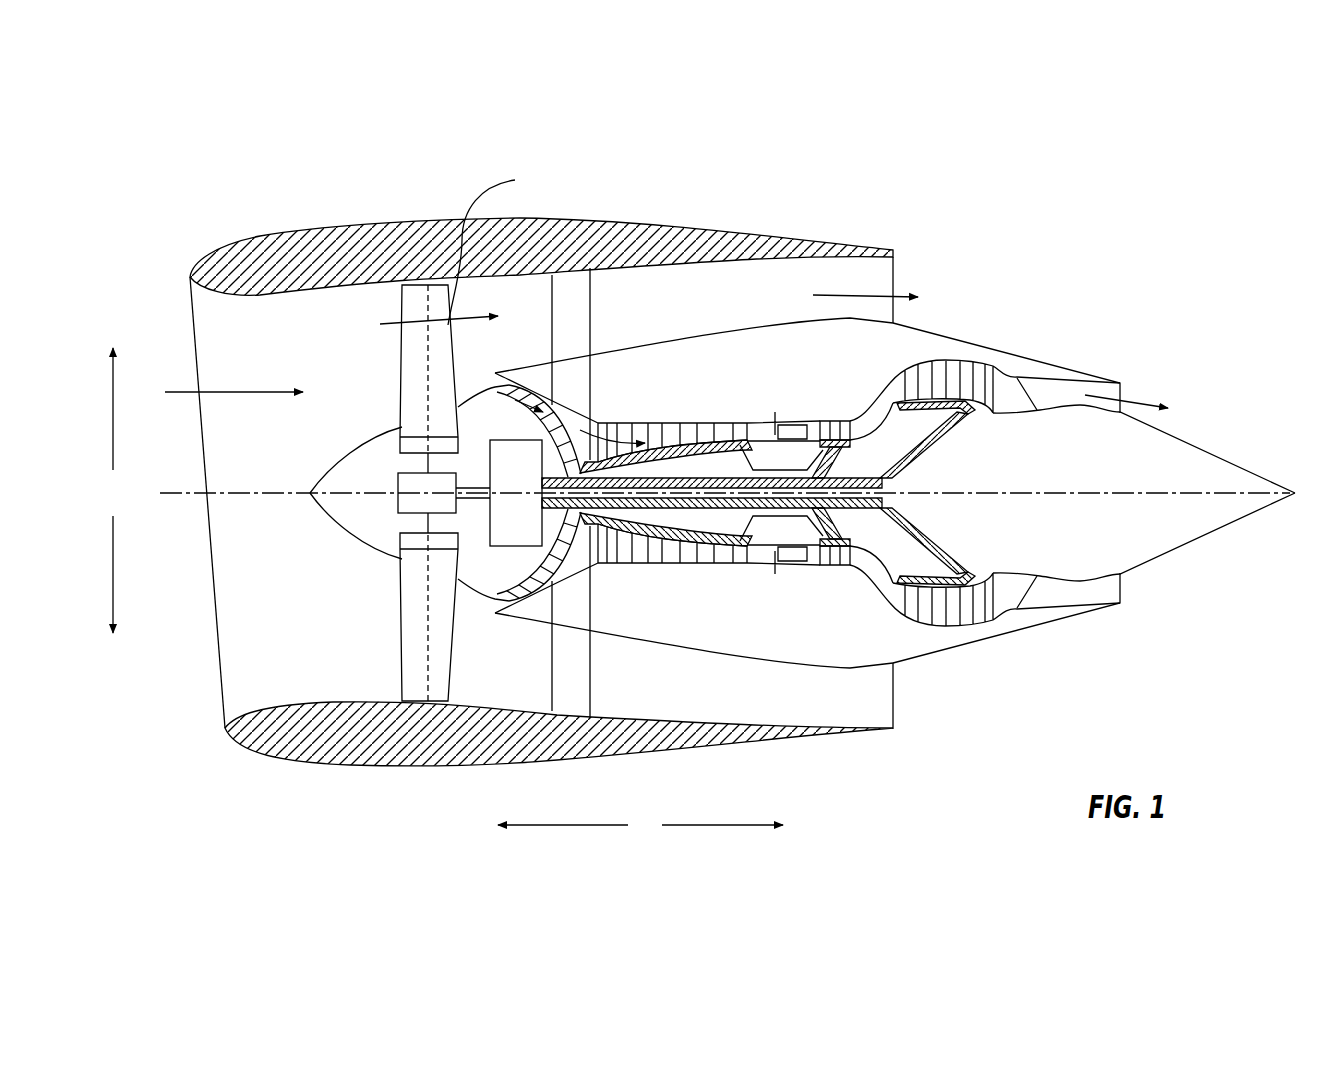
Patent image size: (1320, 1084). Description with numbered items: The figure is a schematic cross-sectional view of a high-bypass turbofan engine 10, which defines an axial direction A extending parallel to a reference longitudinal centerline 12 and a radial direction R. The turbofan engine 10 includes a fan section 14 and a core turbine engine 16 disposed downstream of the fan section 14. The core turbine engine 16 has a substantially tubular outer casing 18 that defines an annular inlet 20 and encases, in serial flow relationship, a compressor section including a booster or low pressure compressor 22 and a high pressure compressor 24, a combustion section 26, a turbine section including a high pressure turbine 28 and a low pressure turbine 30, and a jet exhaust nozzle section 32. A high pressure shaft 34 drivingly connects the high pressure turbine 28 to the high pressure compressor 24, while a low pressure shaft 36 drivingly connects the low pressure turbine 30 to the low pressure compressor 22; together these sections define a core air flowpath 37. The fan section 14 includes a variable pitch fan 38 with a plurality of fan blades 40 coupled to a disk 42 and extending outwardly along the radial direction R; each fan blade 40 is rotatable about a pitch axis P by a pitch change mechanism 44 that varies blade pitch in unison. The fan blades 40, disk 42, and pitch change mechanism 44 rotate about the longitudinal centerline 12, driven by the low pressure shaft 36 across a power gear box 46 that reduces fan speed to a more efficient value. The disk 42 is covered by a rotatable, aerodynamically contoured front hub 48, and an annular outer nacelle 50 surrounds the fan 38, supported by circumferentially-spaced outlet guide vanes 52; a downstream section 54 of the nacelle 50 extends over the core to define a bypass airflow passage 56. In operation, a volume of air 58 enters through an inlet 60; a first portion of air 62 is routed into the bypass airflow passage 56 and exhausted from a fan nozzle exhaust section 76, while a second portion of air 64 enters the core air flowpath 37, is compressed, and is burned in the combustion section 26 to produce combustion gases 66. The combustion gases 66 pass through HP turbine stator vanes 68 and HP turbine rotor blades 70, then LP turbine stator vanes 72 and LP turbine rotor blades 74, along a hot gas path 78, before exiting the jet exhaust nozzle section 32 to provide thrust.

The turbofan engine 10 is at (1037, 233).
The longitudinal centerline 12 is at (1058, 490).
The fan section 14 is at (356, 305).
The core turbine engine 16 is at (710, 383).
The outer casing 18 is at (746, 660).
The annular inlet 20 is at (498, 598).
The low pressure compressor 22 is at (560, 536).
The high pressure compressor 24 is at (620, 555).
The combustion section 26 is at (792, 563).
The high pressure turbine 28 is at (943, 548).
The low pressure turbine 30 is at (977, 617).
The jet exhaust nozzle section 32 is at (1037, 600).
The high pressure shaft 34 is at (834, 450).
The low pressure shaft 36 is at (878, 474).
The core air flowpath 37 is at (581, 552).
The variable pitch fan 38 is at (360, 549).
The fan blades 40 is at (400, 644).
The disk 42 is at (420, 444).
The pitch change mechanism 44 is at (398, 473).
The power gear box 46 is at (575, 407).
The front hub 48 is at (320, 518).
The outer nacelle 50 is at (447, 776).
The outlet guide vanes 52 is at (592, 296).
The downstream section of the nacelle 54 is at (840, 246).
The bypass airflow passage 56 is at (766, 311).
The volume of air 58 is at (240, 390).
The inlet 60 is at (222, 705).
The first portion of air 62 is at (412, 320).
The second portion of air 64 is at (478, 387).
The combustion gases 66 is at (934, 372).
The HP turbine stator vanes 68 is at (828, 562).
The HP turbine rotor blades 70 is at (905, 521).
The LP turbine stator vanes 72 is at (900, 603).
The LP turbine rotor blades 74 is at (912, 610).
The fan nozzle exhaust section 76 is at (882, 280).
The hot gas path 78 is at (880, 398).
The pitch axis P is at (491, 243).
The radial direction R is at (115, 490).
The axial direction A is at (640, 825).